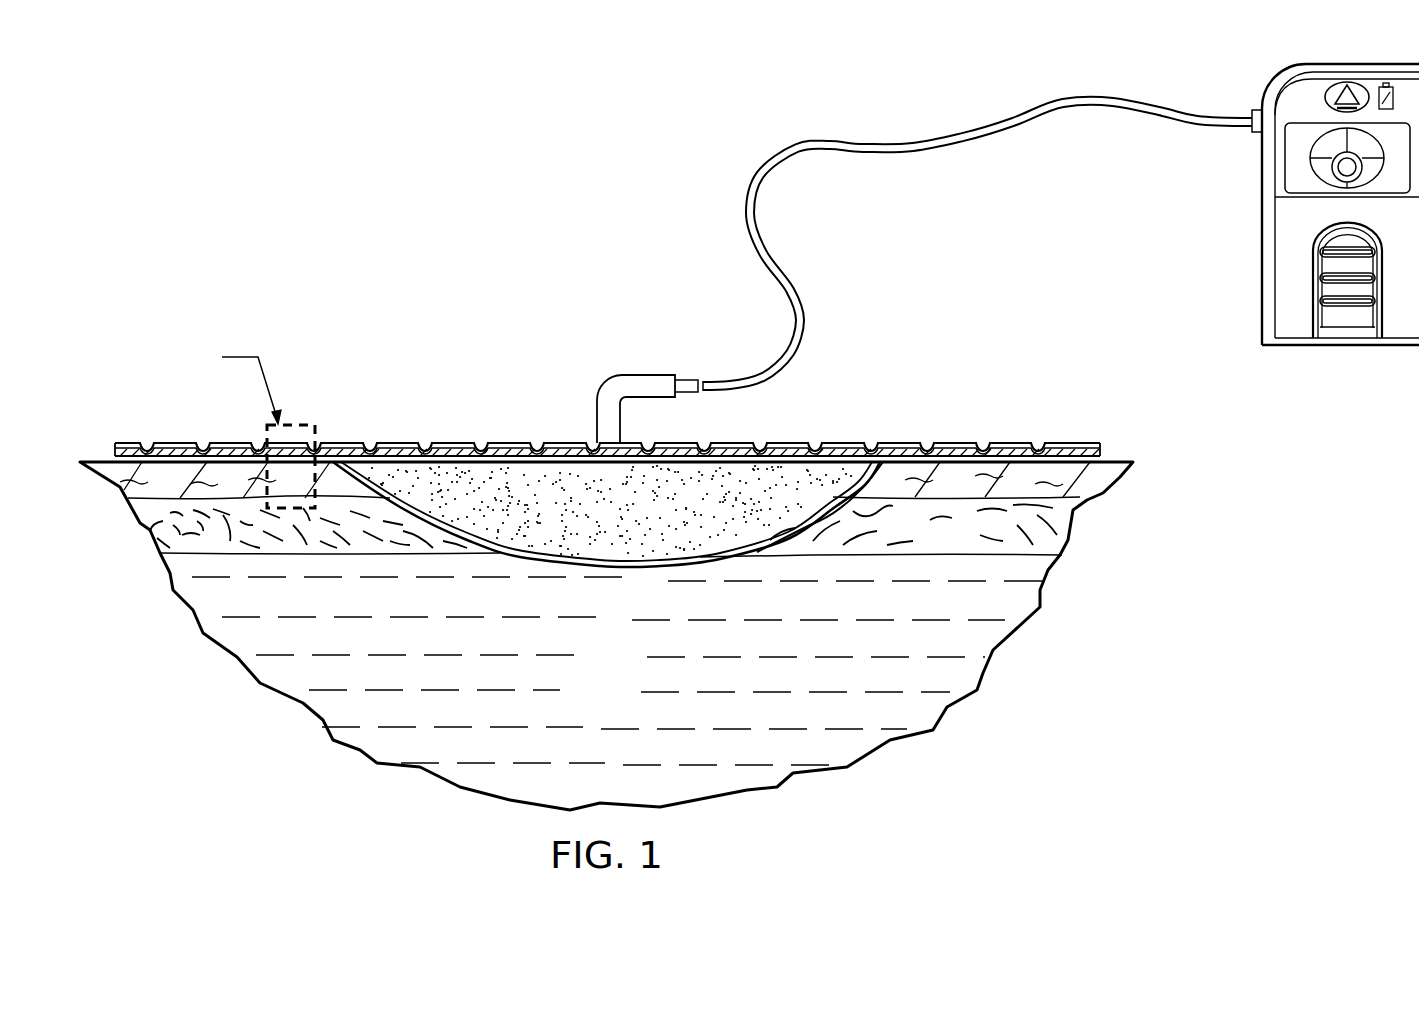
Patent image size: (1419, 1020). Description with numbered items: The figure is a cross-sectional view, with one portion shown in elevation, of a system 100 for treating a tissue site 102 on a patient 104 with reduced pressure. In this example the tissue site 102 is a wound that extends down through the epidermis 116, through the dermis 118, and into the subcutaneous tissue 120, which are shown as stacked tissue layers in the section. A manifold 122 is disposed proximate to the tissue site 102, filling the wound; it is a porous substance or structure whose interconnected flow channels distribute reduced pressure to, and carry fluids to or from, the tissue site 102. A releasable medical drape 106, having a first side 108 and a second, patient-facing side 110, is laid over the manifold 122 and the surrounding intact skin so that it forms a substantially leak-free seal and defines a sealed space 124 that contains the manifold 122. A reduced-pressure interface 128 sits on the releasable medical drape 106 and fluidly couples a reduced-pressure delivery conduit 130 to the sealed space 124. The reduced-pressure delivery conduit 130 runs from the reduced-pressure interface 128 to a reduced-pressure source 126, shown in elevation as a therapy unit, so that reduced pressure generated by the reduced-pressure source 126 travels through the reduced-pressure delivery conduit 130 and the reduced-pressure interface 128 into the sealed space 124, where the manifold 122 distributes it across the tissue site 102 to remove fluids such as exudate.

The system 100 is at (527, 241).
The tissue site 102 is at (556, 566).
The patient 104 is at (992, 662).
The releasable medical drape 106 is at (900, 436).
The first side 108 is at (1030, 444).
The second, patient-facing side 110 is at (1092, 463).
The epidermis 116 is at (1097, 494).
The dermis 118 is at (147, 527).
The subcutaneous tissue 120 is at (628, 683).
The manifold 122 is at (633, 523).
The sealed space 124 is at (878, 470).
The reduced-pressure source 126 is at (1260, 270).
The reduced-pressure interface 128 is at (605, 394).
The reduced-pressure delivery conduit 130 is at (745, 197).